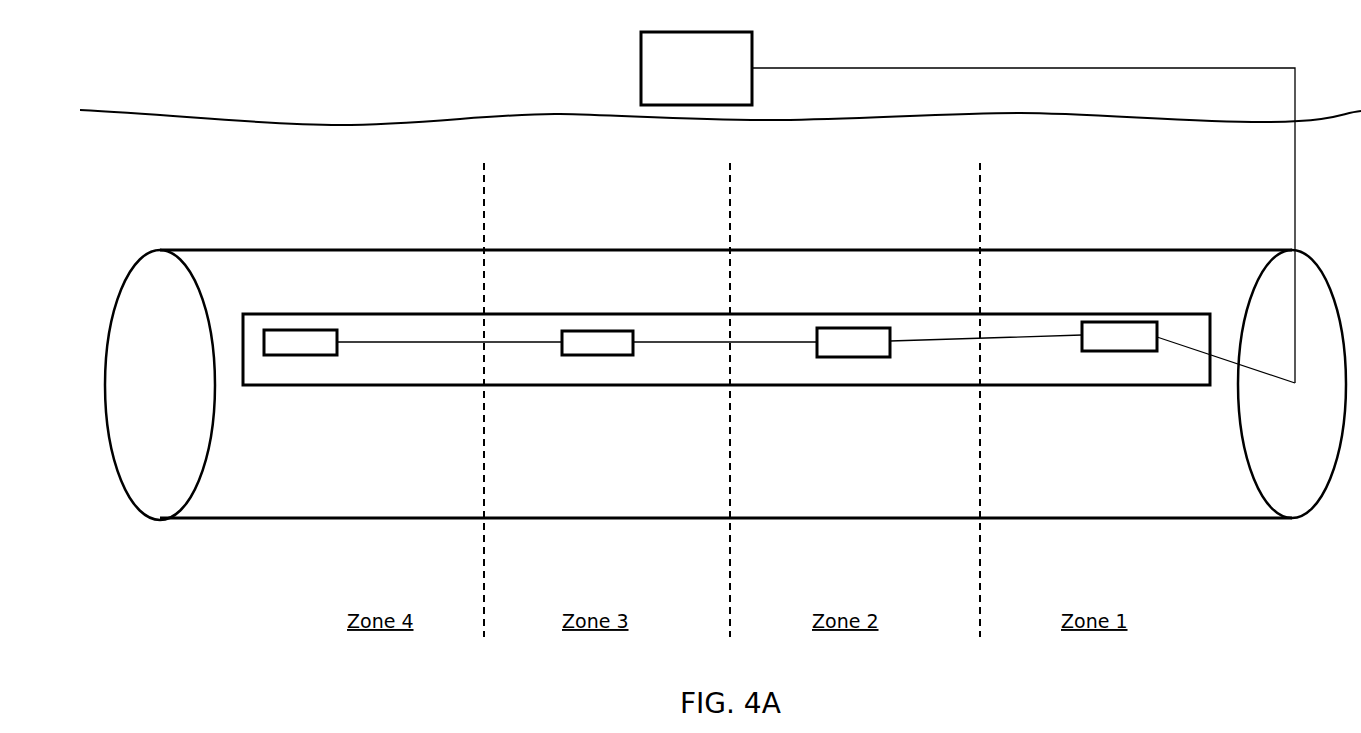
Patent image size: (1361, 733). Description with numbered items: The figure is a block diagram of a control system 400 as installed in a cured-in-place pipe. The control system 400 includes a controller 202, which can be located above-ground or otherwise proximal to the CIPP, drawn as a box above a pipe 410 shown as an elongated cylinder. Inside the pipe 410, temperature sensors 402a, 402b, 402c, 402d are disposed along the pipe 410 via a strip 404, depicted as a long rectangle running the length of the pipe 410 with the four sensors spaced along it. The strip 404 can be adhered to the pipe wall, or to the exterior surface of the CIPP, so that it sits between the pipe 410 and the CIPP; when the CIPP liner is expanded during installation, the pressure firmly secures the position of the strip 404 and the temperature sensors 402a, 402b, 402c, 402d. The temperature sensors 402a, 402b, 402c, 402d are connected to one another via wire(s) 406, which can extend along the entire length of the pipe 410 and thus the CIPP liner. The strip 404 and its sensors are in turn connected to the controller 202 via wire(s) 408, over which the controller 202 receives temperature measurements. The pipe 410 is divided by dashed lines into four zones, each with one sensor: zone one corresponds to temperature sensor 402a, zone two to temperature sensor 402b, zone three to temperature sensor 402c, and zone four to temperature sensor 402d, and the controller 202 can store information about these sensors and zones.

The control system 400 is at (95, 158).
The controller 202 is at (968, 207).
The pipe 410 is at (725, 385).
The strip 404 is at (407, 387).
The wire(s) 406 is at (783, 339).
The wire(s) 408 is at (1262, 373).
The temperature sensor 402a is at (1122, 321).
The temperature sensor 402b is at (855, 326).
The temperature sensor 402c is at (597, 332).
The temperature sensor 402d is at (299, 331).